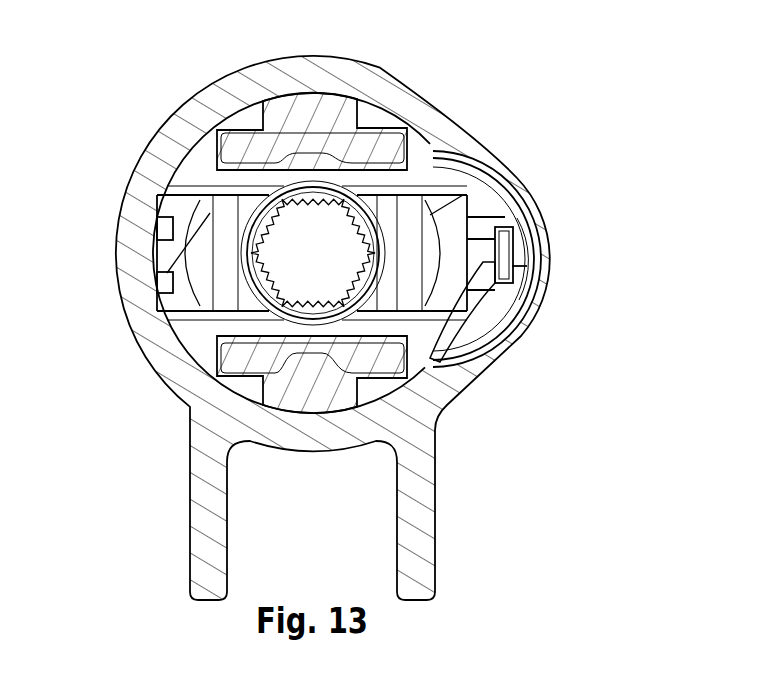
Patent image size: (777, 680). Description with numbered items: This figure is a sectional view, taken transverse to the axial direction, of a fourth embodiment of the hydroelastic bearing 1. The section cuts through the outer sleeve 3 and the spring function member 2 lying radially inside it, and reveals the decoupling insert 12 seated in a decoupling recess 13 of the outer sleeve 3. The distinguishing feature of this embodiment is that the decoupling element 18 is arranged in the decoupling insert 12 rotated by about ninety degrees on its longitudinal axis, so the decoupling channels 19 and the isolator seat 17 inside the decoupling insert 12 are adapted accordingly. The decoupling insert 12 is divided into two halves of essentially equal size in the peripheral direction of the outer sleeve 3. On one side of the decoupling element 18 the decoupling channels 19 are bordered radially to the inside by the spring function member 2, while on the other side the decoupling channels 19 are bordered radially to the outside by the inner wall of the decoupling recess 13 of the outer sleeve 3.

The hydroelastic bearing 1 is at (156, 64).
The spring function member 2 is at (380, 90).
The outer sleeve 3 is at (128, 178).
The decoupling insert 12 is at (497, 152).
The decoupling recess 13 is at (497, 372).
The isolator seat 17 is at (527, 332).
The decoupling element 18 is at (538, 262).
The decoupling channels 19 is at (535, 192).